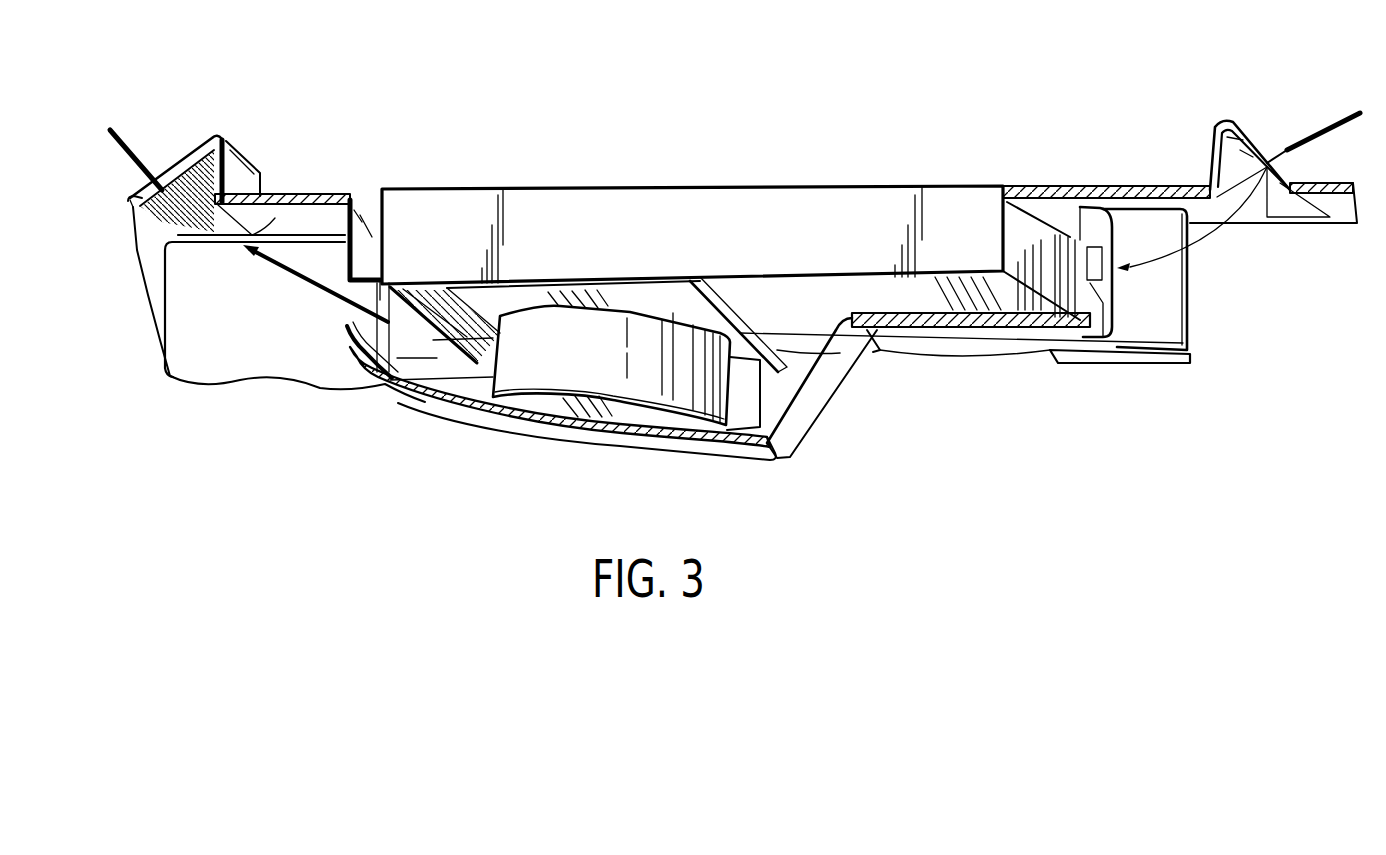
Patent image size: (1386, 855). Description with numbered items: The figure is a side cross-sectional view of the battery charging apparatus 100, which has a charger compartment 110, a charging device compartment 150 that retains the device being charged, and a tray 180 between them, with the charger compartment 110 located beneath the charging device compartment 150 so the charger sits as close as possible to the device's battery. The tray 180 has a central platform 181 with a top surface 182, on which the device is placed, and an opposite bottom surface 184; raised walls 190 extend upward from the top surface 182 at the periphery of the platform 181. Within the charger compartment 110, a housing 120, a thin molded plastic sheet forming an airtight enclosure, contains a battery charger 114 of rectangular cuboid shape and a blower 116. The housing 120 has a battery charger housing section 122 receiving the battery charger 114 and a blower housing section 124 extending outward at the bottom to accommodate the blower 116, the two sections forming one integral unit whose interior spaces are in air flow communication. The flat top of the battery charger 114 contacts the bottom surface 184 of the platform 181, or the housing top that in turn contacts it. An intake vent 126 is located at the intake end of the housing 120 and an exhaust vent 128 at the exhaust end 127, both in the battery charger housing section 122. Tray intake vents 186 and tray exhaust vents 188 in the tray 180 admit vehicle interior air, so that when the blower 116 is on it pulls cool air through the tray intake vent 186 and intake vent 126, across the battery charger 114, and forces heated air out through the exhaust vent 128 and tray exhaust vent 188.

The battery charging apparatus 100 is at (546, 88).
The charger compartment 110 is at (350, 490).
The battery charger 114 is at (712, 210).
The blower 116 is at (582, 415).
The housing 120 is at (820, 395).
The battery charger housing section 122 is at (1175, 287).
The blower housing section 124 is at (912, 395).
The intake vent 126 is at (1121, 310).
The exhaust end 127 is at (350, 338).
The exhaust vent 128 is at (328, 306).
The charging device compartment 150 is at (1163, 113).
The tray 180 is at (165, 136).
The central platform 181 is at (362, 197).
The top surface 182 is at (1060, 185).
The bottom surface 184 is at (234, 238).
The tray intake vent 186 is at (1262, 150).
The tray exhaust vent 188 is at (143, 193).
The raised wall 190 is at (248, 178).